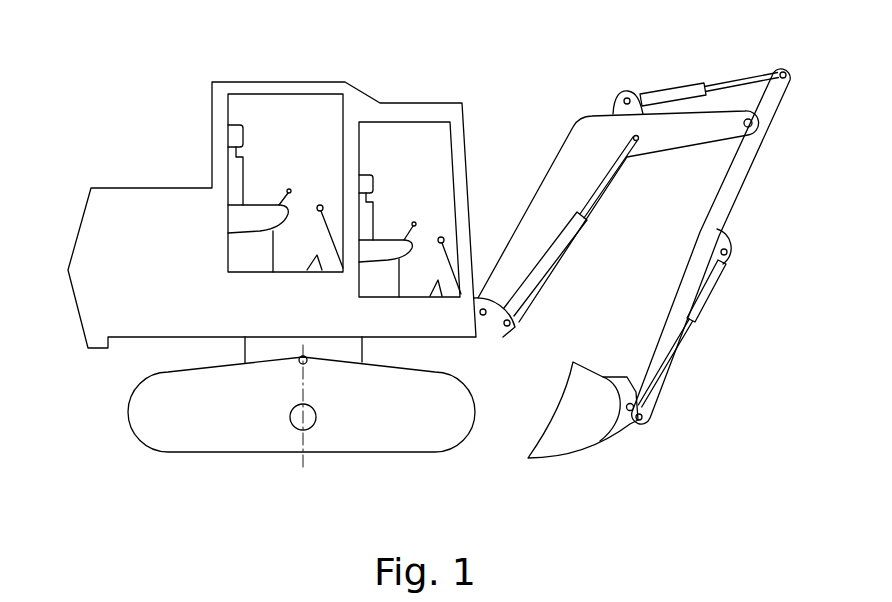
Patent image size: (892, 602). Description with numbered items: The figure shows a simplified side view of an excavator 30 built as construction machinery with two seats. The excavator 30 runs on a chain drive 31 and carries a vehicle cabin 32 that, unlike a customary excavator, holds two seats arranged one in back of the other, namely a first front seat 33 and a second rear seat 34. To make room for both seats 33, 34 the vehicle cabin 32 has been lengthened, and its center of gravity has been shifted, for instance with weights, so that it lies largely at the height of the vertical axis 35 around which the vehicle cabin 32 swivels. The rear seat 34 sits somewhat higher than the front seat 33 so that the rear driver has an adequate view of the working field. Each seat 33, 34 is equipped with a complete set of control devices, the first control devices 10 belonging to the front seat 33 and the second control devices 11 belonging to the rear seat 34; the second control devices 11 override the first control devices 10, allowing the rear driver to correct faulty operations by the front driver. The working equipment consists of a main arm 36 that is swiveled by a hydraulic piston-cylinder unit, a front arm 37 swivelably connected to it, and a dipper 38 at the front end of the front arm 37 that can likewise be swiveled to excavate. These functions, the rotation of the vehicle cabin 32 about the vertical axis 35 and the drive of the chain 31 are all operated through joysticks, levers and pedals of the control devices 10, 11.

The excavator 30 is at (457, 78).
The chain drive 31 is at (193, 373).
The vehicle cabin 32 is at (258, 88).
The first front seat 33 is at (383, 245).
The second rear seat 34 is at (257, 213).
The vertical axis 35 is at (305, 438).
The main arm 36 is at (597, 140).
The front arm 37 is at (727, 187).
The dipper 38 is at (568, 438).
The first control devices 10 is at (418, 217).
The second control devices 11 is at (318, 200).